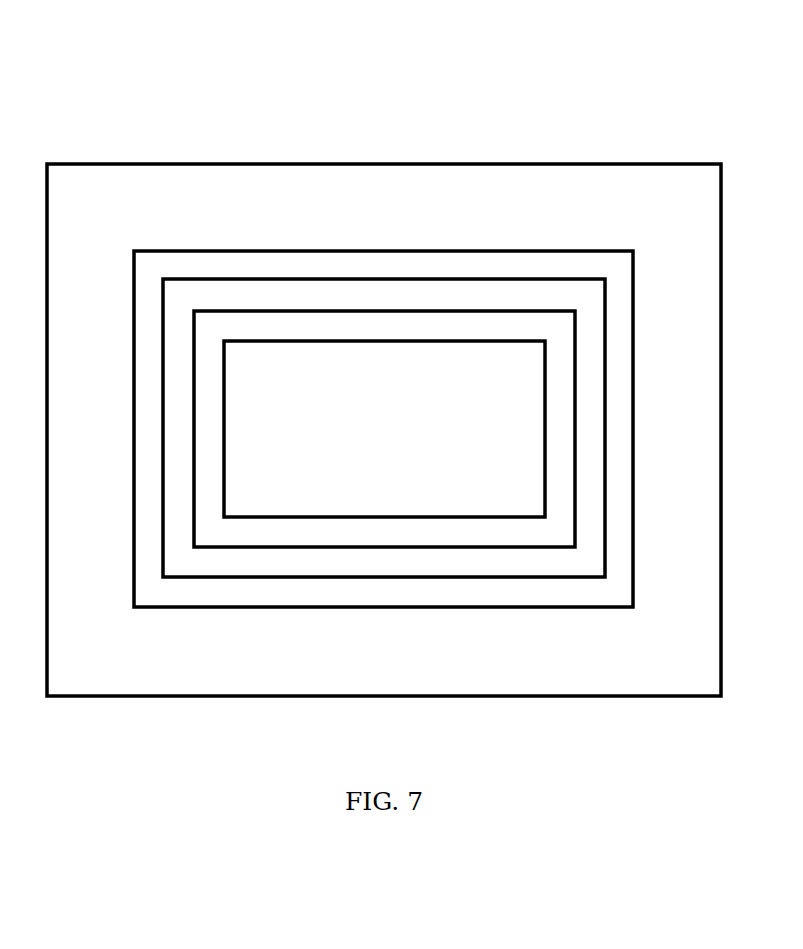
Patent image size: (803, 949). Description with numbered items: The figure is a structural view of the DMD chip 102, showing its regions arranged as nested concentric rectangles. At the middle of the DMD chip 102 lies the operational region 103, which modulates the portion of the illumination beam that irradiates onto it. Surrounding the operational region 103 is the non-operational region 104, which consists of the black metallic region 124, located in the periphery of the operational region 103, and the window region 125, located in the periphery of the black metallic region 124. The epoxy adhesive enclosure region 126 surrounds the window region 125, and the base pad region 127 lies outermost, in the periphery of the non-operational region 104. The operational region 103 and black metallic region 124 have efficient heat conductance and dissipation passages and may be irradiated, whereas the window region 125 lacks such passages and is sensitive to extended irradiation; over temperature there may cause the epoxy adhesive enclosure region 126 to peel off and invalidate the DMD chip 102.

The DMD chip 102 is at (195, 221).
The operational region 103 is at (368, 488).
The non-operational region 104 is at (524, 59).
The black metallic region 124 is at (463, 331).
The window region 125 is at (362, 300).
The epoxy adhesive enclosure region 126 is at (292, 273).
The base pad region 127 is at (578, 239).